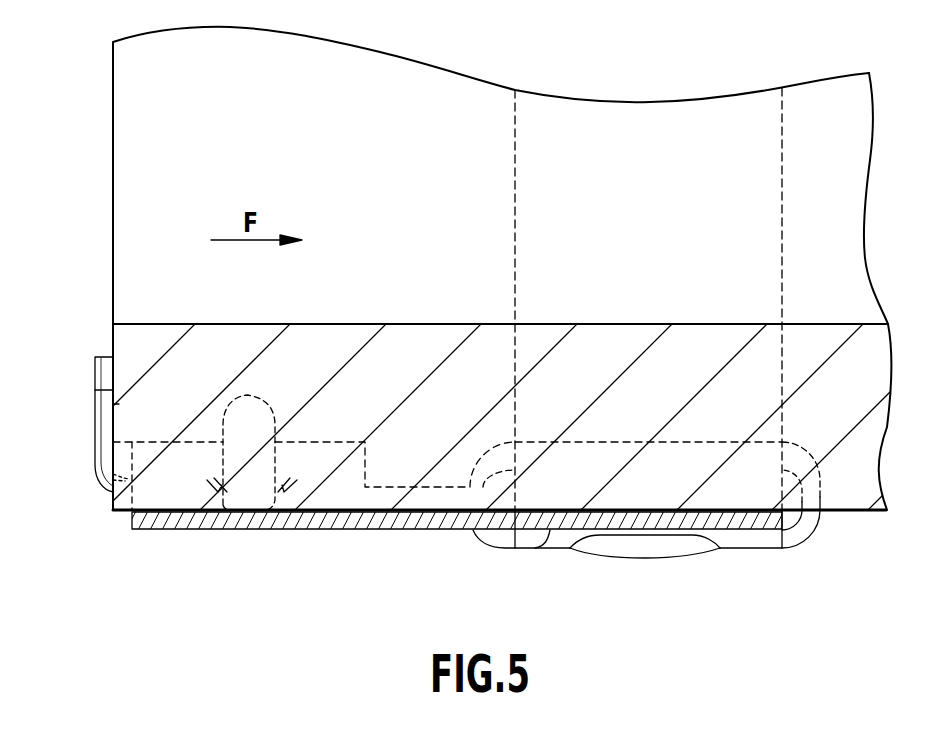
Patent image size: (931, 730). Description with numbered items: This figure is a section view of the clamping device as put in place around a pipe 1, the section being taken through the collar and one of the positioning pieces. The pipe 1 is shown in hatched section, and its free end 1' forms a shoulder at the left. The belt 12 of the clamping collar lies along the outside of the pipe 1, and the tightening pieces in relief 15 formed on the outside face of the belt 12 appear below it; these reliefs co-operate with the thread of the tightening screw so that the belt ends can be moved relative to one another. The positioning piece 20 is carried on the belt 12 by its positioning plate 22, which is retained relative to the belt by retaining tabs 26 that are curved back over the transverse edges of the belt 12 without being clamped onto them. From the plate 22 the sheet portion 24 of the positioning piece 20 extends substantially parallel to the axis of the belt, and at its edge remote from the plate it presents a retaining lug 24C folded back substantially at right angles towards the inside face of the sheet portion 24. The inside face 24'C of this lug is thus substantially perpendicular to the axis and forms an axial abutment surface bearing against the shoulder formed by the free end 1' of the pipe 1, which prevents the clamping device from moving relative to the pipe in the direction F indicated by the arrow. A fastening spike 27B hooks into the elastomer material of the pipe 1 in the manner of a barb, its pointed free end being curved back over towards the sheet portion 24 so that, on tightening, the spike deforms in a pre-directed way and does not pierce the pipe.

The pipe 1 is at (468, 270).
The free end of the pipe 1' is at (79, 373).
The retaining lug 24C is at (102, 434).
The inside face of the retaining lug 24'C is at (140, 344).
The fastening spike 27B is at (243, 425).
The positioning piece 20 is at (422, 540).
The shield plate 24 is at (455, 543).
The positioning plate 22 is at (540, 549).
The tightening pieces in relief 15 is at (640, 557).
The belt 12 is at (742, 541).
The retaining tabs 26 is at (808, 531).